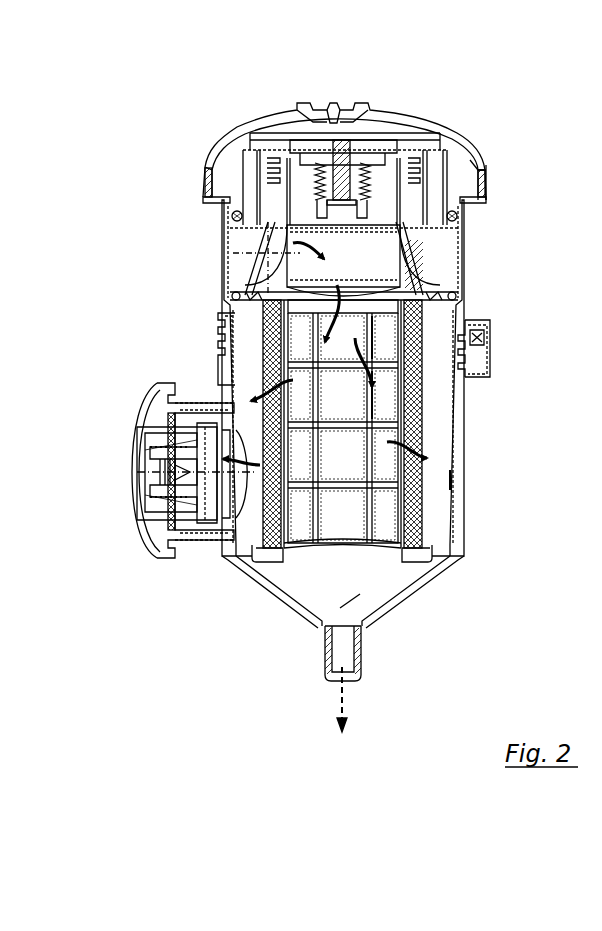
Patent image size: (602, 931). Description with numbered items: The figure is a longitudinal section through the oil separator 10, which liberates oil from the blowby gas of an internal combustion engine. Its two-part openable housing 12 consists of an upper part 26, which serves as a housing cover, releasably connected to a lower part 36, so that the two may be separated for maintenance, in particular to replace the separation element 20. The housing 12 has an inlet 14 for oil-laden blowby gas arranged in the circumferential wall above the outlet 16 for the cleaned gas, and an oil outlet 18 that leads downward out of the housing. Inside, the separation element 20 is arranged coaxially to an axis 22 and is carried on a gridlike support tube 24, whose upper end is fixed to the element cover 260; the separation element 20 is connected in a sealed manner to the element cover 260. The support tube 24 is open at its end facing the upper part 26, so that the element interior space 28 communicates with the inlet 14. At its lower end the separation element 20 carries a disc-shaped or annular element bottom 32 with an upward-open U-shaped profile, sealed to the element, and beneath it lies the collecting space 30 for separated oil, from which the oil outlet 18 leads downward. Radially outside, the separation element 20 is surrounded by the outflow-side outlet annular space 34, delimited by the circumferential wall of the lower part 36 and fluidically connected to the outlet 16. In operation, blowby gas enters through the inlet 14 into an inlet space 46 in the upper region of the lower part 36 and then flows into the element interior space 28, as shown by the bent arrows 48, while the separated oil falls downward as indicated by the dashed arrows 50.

The oil separator 10 is at (136, 100).
The housing 12 is at (258, 127).
The inlet 14 is at (265, 250).
The outlet 16 is at (215, 462).
The oil outlet 18 is at (330, 660).
The separation element 20 is at (413, 505).
The axis 22 is at (343, 604).
The support tube 24 is at (388, 426).
The upper part 26 is at (483, 163).
The element interior space 28 is at (359, 465).
The collecting space 30 is at (333, 600).
The element bottom 32 is at (443, 548).
The outlet annular space 34 is at (247, 347).
The lower part 36 is at (450, 478).
The inlet space 46 is at (381, 265).
The bent arrows 48 is at (383, 384).
The dashed arrows 50 is at (345, 706).
The element cover 260 is at (412, 262).